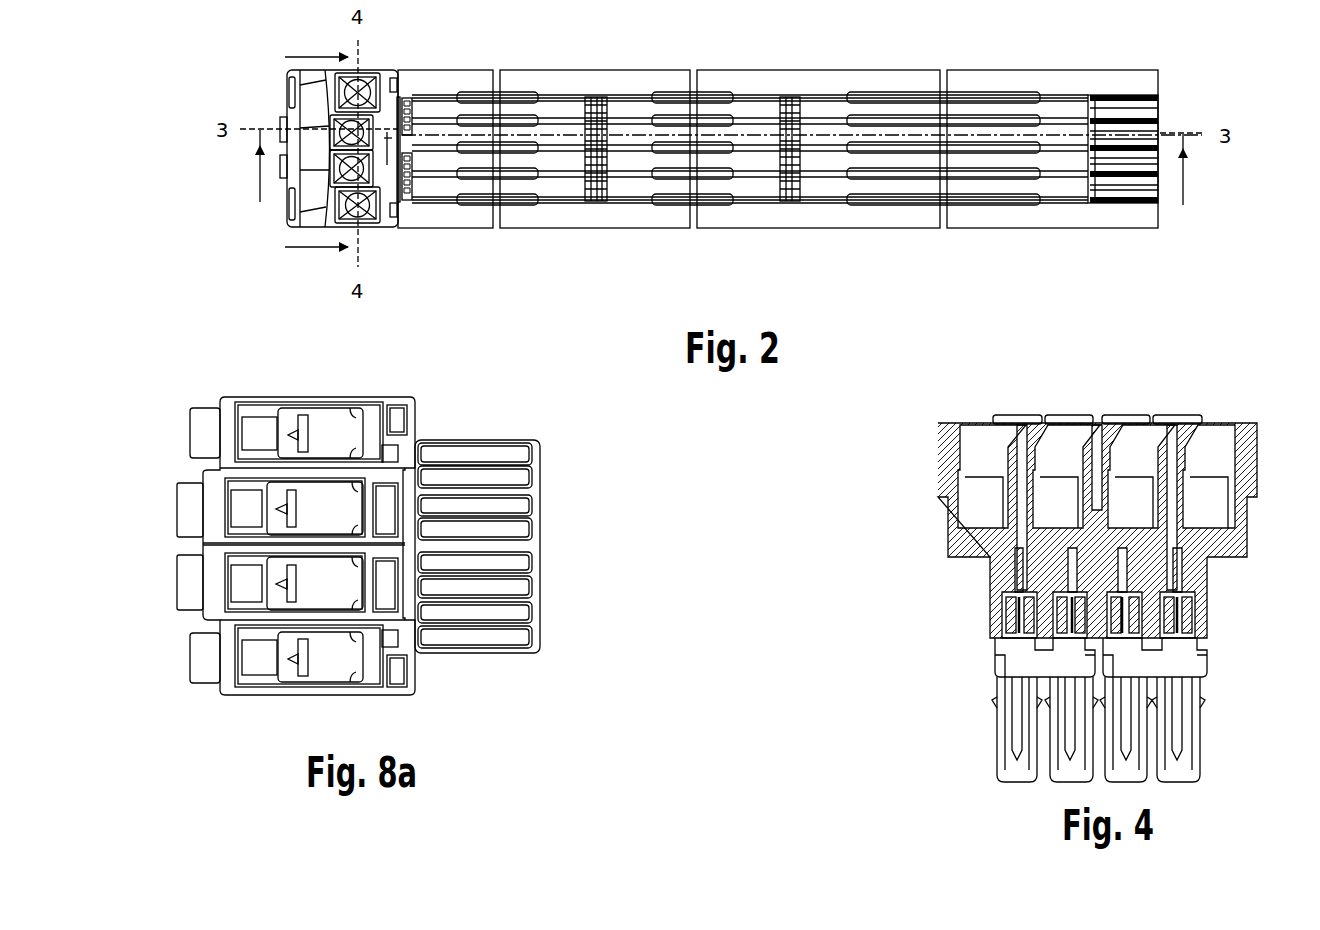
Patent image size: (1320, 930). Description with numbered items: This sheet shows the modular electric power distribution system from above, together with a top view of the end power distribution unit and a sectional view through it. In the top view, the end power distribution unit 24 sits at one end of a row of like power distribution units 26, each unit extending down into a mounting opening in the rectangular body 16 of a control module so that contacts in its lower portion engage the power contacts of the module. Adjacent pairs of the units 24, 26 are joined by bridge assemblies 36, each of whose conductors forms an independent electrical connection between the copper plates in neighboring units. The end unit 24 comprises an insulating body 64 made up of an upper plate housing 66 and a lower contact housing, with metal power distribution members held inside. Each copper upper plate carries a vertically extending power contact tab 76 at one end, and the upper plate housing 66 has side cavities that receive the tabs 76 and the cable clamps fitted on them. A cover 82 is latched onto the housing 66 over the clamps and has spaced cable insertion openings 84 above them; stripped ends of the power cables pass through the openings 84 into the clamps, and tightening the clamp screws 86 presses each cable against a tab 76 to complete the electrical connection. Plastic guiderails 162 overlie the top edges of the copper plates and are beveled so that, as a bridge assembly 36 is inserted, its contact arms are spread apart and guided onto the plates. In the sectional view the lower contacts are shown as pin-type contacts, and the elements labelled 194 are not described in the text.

In FIG. 2, the rectangular body 16 is at (478, 218).
In FIG. 2, the end power distribution unit 24 is at (425, 207).
In FIG. 8A, the end power distribution unit 24 is at (284, 528).
In FIG. 2, the power distribution unit 26 is at (630, 206).
In FIG. 2, the bridge assembly 36 is at (575, 93).
In FIG. 8A, the insulating body 64 is at (298, 398).
In FIG. 4, the insulating body 64 is at (1257, 442).
In FIG. 8A, the upper plate housing 66 is at (498, 547).
In FIG. 4, the upper plate housing 66 is at (1207, 600).
In FIG. 8A, the power contact tab 76 is at (292, 510).
In FIG. 8A, the cover 82 is at (383, 697).
In FIG. 8A, the cable insertion opening 84 is at (265, 663).
In FIG. 8A, the clamp screw 86 is at (176, 565).
In FIG. 8A, the guiderail 162 is at (480, 633).
In FIG. 4, the terminal pins 194 is at (1065, 707).